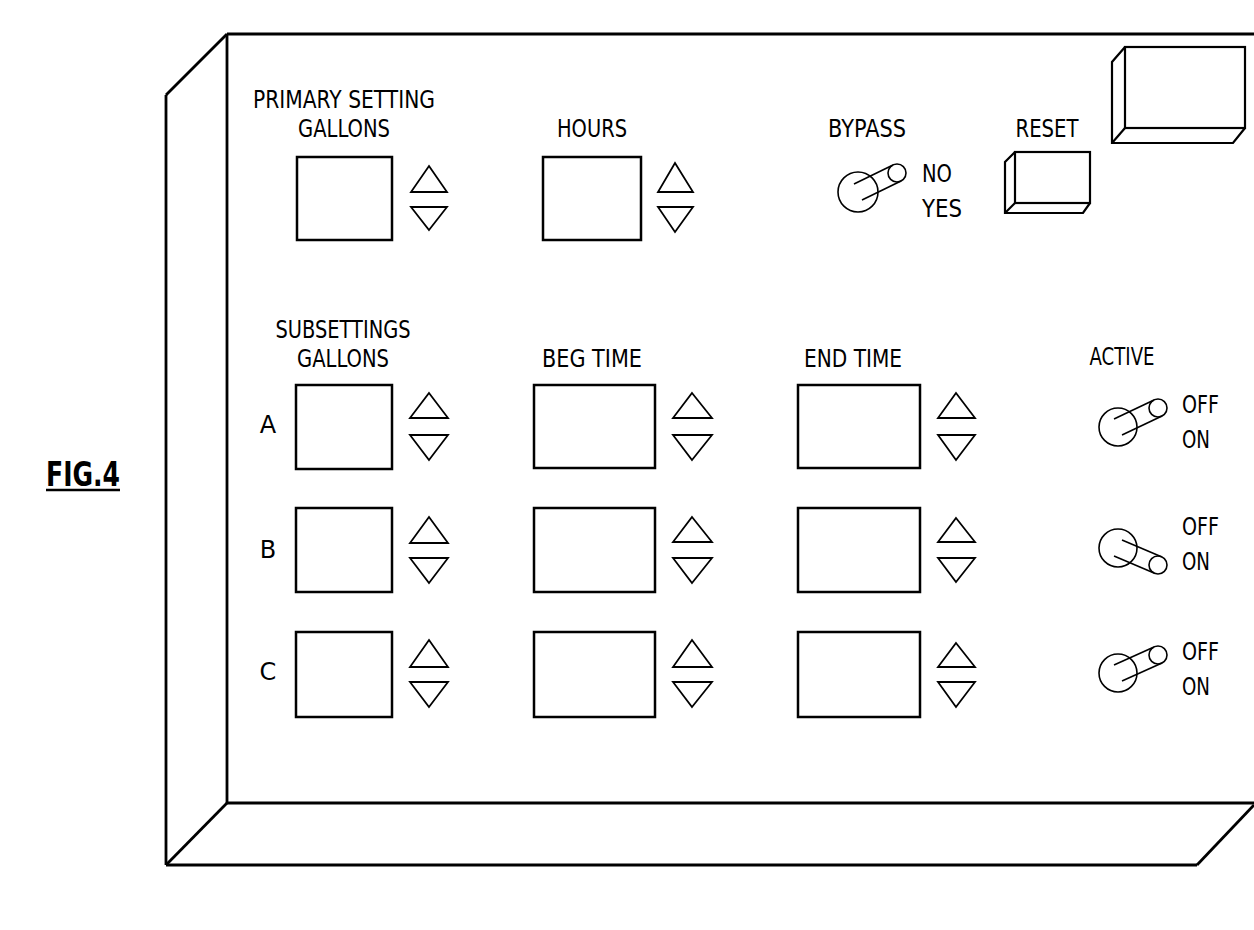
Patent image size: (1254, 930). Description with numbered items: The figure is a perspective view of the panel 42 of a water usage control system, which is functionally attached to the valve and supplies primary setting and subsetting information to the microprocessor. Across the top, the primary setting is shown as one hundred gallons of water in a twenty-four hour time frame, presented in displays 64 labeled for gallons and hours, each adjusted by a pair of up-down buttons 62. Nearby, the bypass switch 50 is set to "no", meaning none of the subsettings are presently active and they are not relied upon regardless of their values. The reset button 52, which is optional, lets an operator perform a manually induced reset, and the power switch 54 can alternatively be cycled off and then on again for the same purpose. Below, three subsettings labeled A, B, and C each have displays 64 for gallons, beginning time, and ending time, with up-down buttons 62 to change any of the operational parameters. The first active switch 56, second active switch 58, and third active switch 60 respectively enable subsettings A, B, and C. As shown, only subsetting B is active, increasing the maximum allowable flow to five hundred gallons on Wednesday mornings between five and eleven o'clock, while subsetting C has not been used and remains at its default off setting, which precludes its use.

The panel 42 is at (242, 34).
The bypass switch 50 is at (843, 187).
The reset button 52 is at (1091, 186).
The power switch 54 is at (1121, 83).
The first active switch 56 is at (1102, 421).
The second active switch 58 is at (1102, 543).
The third active switch 60 is at (1102, 666).
The up-down buttons 62 is at (437, 215).
The displays 64 is at (297, 201).